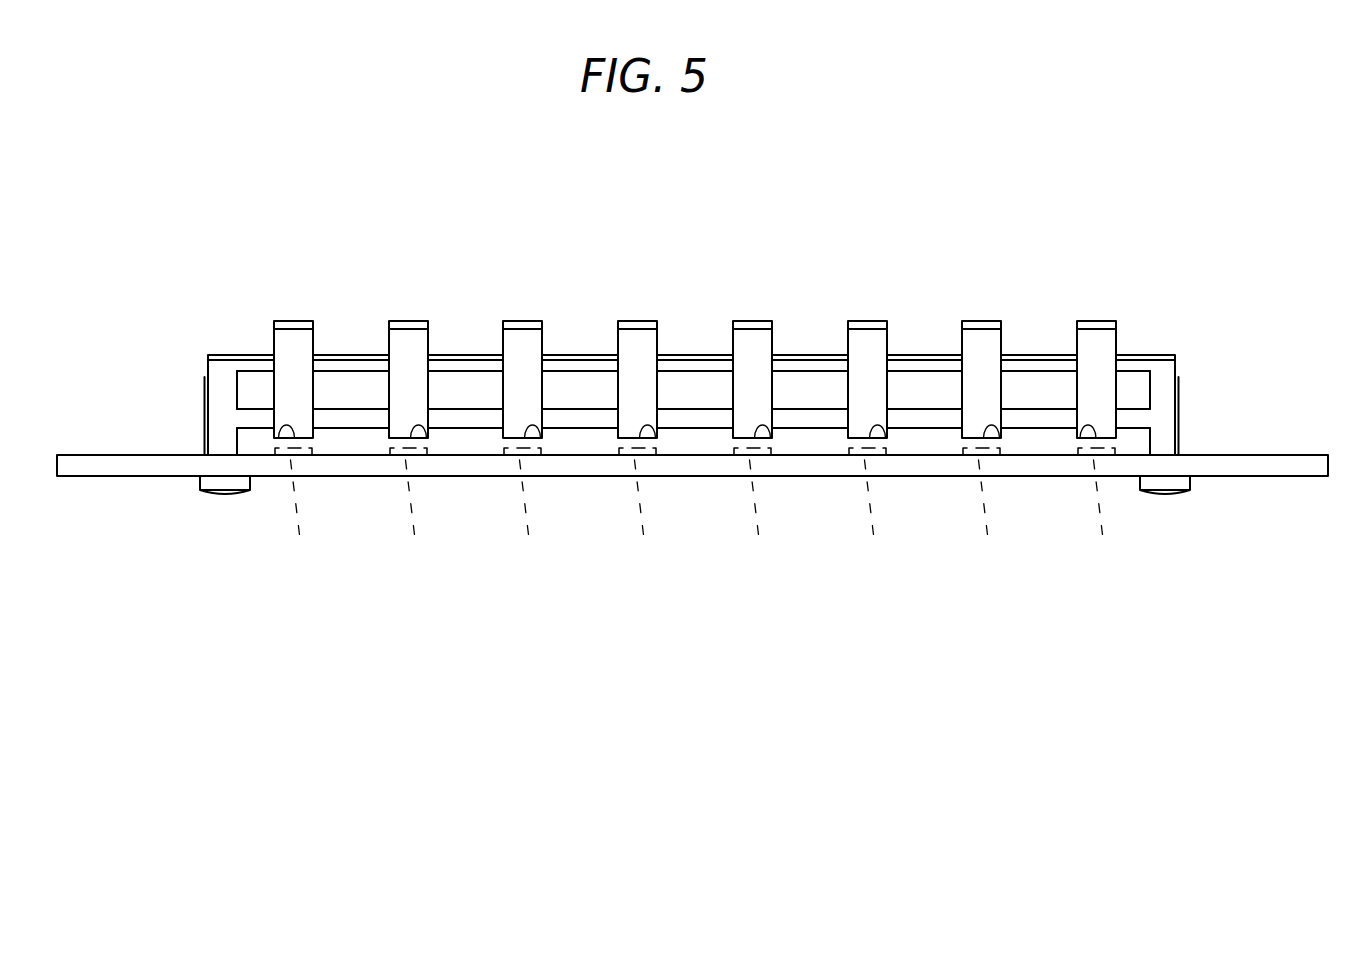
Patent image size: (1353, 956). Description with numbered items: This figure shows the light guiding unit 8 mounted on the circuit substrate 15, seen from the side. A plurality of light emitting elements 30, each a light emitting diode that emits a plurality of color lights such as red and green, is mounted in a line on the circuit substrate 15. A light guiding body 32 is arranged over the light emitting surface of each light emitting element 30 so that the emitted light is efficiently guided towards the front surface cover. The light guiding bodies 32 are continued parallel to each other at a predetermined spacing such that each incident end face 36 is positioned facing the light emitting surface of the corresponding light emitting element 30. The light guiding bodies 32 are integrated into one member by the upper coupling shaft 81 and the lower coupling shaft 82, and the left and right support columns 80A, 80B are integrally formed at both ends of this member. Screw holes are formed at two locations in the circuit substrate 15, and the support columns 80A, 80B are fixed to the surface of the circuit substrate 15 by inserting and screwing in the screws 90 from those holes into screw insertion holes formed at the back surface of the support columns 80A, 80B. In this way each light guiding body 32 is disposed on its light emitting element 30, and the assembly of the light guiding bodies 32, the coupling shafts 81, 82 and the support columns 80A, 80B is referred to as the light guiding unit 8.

The light guiding unit 8 is at (250, 299).
The circuit substrate 15 is at (1240, 466).
The light emitting element 30 is at (697, 508).
The light guiding body 32 is at (408, 335).
The incident end face 36 is at (280, 430).
The left support column 80A is at (215, 405).
The right support column 80B is at (1165, 405).
The upper coupling shaft 81 is at (463, 353).
The lower coupling shaft 82 is at (350, 423).
The screw 90 is at (223, 496).